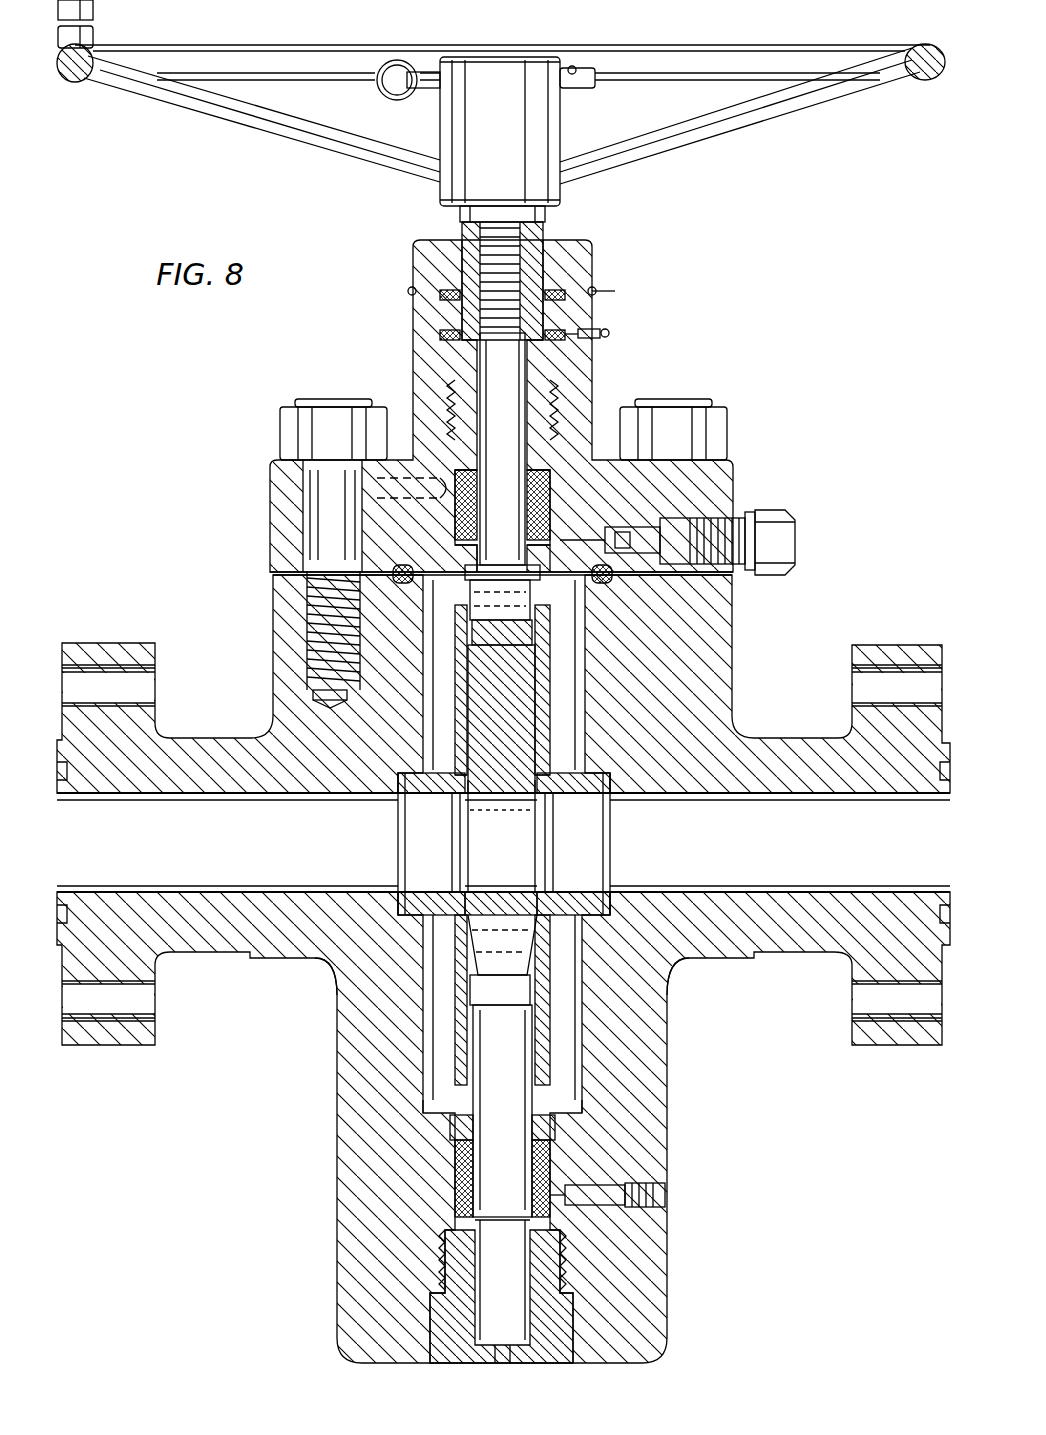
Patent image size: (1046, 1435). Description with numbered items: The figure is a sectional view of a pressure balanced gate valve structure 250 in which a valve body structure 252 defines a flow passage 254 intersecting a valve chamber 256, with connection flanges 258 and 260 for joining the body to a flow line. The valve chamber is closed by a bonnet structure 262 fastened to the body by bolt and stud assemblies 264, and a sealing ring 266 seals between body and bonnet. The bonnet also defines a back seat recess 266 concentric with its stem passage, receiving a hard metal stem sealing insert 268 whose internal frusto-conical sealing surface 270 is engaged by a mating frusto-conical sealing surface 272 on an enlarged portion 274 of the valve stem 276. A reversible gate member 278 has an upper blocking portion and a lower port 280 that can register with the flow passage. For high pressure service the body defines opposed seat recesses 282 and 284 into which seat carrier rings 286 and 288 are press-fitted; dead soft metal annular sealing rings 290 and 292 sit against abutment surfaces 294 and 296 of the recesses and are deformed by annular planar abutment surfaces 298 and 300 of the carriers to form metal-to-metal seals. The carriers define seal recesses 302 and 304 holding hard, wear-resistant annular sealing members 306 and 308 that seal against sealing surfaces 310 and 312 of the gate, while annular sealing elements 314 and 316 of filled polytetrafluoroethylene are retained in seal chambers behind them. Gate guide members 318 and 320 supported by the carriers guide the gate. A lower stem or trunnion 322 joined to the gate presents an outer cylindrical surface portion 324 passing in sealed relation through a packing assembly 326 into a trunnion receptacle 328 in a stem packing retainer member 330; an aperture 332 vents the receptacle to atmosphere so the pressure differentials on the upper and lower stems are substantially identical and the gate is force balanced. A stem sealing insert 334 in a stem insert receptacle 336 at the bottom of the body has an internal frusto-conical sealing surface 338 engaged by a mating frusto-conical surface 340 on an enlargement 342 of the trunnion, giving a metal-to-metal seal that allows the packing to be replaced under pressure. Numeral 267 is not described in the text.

The gate valve structure 250 is at (822, 592).
The valve body structure 252 is at (718, 667).
The flow passage 254 is at (790, 885).
The valve chamber 256 is at (590, 1105).
The connection flange 258 is at (102, 643).
The connection flange 260 is at (910, 645).
The bonnet structure 262 is at (717, 482).
The bolt and stud assemblies 264 is at (718, 432).
The sealing ring / back seat recess 266 is at (457, 562).
The packing retainer 267 is at (395, 571).
The stem sealing insert 268 is at (450, 560).
The frusto-conical sealing surface 270 is at (585, 586).
The frusto-conical sealing surface 272 is at (603, 578).
The enlarged portion of valve stem 274 is at (315, 603).
The valve stem 276 is at (515, 405).
The gate member 278 is at (525, 692).
The port 280 is at (490, 790).
The seat recess 282 is at (400, 920).
The seat recess 284 is at (620, 930).
The seat carrier ring 286 is at (400, 781).
The seat carrier ring 288 is at (606, 779).
The annular sealing ring 290 is at (402, 796).
The annular sealing ring 292 is at (608, 796).
The abutment surface 294 is at (452, 800).
The abutment surface 296 is at (555, 800).
The annular planar abutment surface 298 is at (405, 890).
The annular planar abutment surface 300 is at (620, 890).
The seal recess 302 is at (455, 892).
The seal recess 304 is at (548, 892).
The annular sealing member 306 is at (472, 842).
The annular sealing member 308 is at (545, 832).
The sealing surface 310 is at (458, 716).
The sealing surface 312 is at (548, 722).
The annular sealing element 314 is at (458, 772).
The annular sealing element 316 is at (550, 772).
The gate guide member 318 is at (468, 655).
The gate guide member 320 is at (540, 660).
The lower stem or trunnion 322 is at (510, 1030).
The outer cylindrical surface portion 324 is at (435, 1120).
The packing assembly 326 is at (548, 1182).
The trunnion receptacle 328 is at (565, 1260).
The stem packing retainer member 330 is at (552, 1315).
The aperture 332 is at (600, 1348).
The stem sealing insert 334 is at (458, 1193).
The stem insert receptacle 336 is at (452, 1150).
The internal frusto-conical sealing surface 338 is at (555, 1147).
The frusto-conical surface 340 is at (548, 1018).
The enlargement of lower stem 342 is at (478, 995).